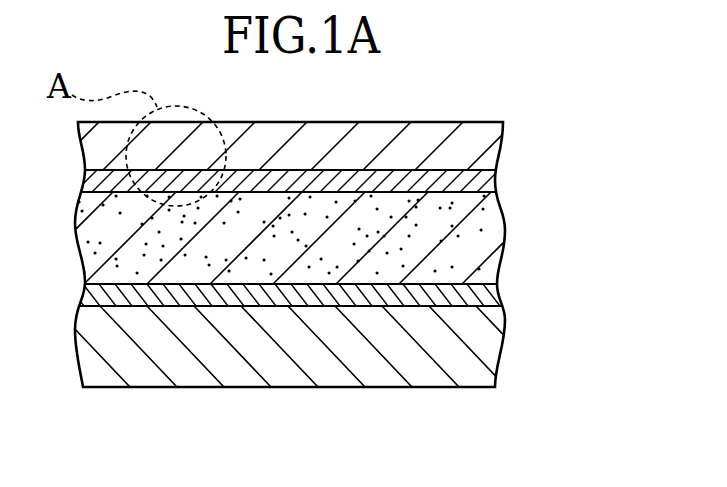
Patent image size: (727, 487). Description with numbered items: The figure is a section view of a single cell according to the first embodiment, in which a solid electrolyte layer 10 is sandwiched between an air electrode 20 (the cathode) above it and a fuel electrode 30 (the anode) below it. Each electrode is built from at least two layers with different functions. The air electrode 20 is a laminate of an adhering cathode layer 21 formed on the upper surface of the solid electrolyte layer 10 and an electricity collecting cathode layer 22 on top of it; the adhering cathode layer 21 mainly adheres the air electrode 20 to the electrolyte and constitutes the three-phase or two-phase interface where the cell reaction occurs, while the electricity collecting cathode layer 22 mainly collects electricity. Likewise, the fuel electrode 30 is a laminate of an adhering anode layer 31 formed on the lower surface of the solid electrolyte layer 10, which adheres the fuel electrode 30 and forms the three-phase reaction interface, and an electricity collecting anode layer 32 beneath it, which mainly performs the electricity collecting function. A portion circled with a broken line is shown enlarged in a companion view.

The solid electrolyte layer 10 is at (483, 233).
The air electrode 20 is at (340, 160).
The adhering cathode layer 21 is at (483, 178).
The electricity collecting cathode layer 22 is at (483, 150).
The fuel electrode 30 is at (317, 333).
The adhering anode layer 31 is at (483, 295).
The electricity collecting anode layer 32 is at (290, 346).